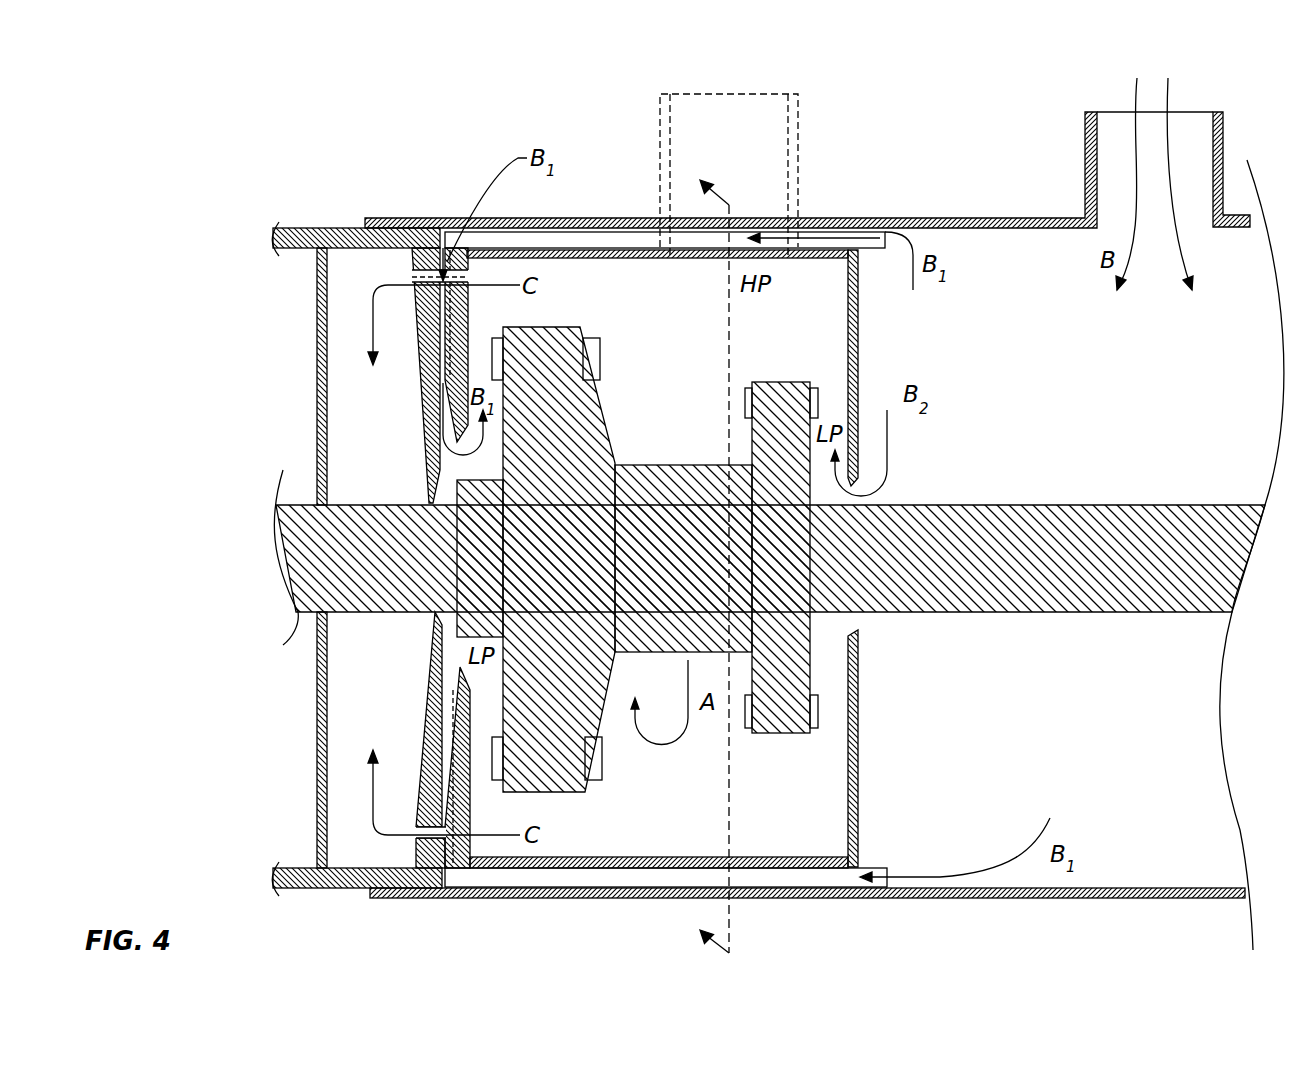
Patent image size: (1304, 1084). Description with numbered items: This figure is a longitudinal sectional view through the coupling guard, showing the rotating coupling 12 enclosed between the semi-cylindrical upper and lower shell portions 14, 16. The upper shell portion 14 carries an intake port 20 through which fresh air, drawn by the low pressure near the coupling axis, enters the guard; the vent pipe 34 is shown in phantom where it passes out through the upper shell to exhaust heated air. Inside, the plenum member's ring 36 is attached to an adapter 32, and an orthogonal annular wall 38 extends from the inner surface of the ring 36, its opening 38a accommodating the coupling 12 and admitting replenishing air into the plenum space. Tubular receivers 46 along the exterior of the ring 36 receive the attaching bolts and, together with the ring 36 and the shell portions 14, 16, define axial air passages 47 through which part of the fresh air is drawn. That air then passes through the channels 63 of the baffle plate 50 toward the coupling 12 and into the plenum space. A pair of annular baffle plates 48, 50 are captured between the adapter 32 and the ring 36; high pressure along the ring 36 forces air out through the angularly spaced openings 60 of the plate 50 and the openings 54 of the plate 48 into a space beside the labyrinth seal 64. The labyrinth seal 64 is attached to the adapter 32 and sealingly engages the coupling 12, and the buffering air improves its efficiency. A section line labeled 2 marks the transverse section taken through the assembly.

The section line 2- 2 is at (703, 555).
The coupling 12 is at (1075, 500).
The upper shell portion 14 is at (820, 222).
The lower shell portion 16 is at (1048, 898).
The intake port 20 is at (1223, 148).
The adapter 32 is at (290, 230).
The vent pipe 34 is at (798, 152).
The ring 36 is at (555, 258).
The orthogonal annular wall 38 is at (857, 318).
The opening 38a is at (845, 633).
The tubular receivers 46 is at (870, 248).
The axial air passages 47 is at (575, 232).
The baffle plate 48 is at (423, 683).
The baffle plate 50 is at (470, 720).
The angularly spaced openings 54 is at (432, 272).
The angularly spaced openings 60 is at (470, 272).
The channels 63 is at (448, 262).
The labyrinth seal 64 is at (316, 345).